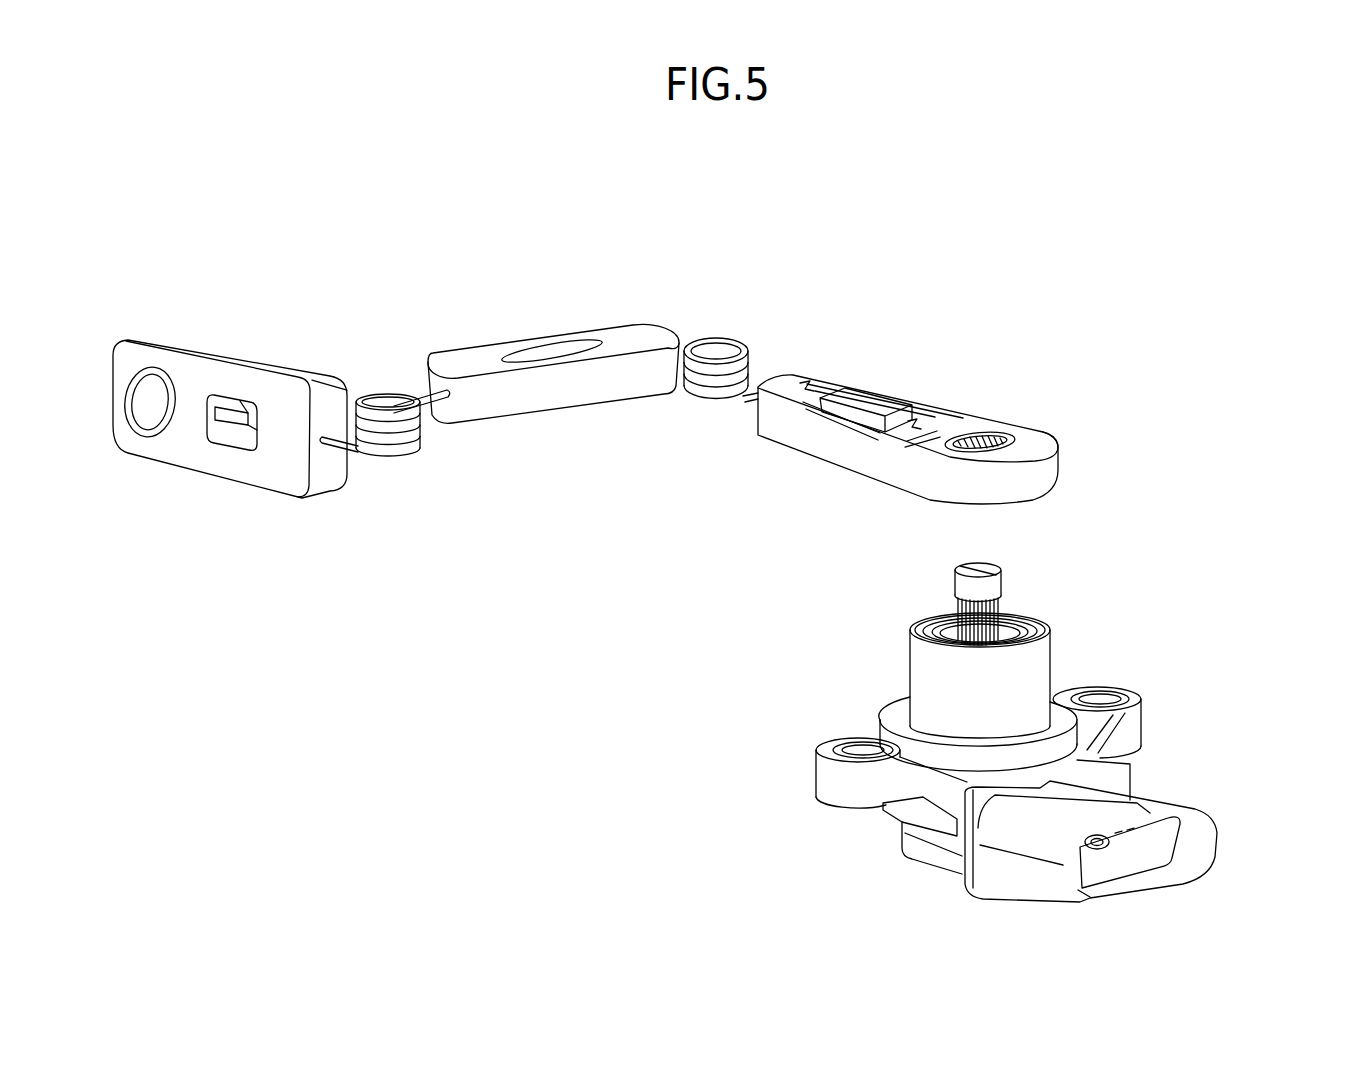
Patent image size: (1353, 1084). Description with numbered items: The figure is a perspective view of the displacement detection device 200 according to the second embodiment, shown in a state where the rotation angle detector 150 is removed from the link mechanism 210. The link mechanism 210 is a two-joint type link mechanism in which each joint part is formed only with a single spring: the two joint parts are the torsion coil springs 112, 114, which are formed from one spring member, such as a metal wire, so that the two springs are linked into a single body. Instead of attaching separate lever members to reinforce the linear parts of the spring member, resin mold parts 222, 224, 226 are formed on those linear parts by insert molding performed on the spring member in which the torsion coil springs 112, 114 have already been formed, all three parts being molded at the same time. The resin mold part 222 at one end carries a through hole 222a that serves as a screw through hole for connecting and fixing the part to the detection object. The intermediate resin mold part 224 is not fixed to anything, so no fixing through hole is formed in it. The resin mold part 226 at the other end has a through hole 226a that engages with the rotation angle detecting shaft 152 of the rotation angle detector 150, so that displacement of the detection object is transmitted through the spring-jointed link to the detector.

The displacement detection device 200 is at (532, 187).
The link mechanism 210 is at (500, 312).
The torsion coil spring 112 is at (403, 457).
The torsion coil spring 114 is at (711, 399).
The resin mold part 222 is at (232, 380).
The through hole 222a is at (151, 397).
The resin mold part 224 is at (560, 393).
The resin mold part 226 is at (847, 460).
The through hole 226a is at (982, 437).
The rotation angle detector 150 is at (873, 858).
The rotation angle detecting shaft 152 is at (985, 603).